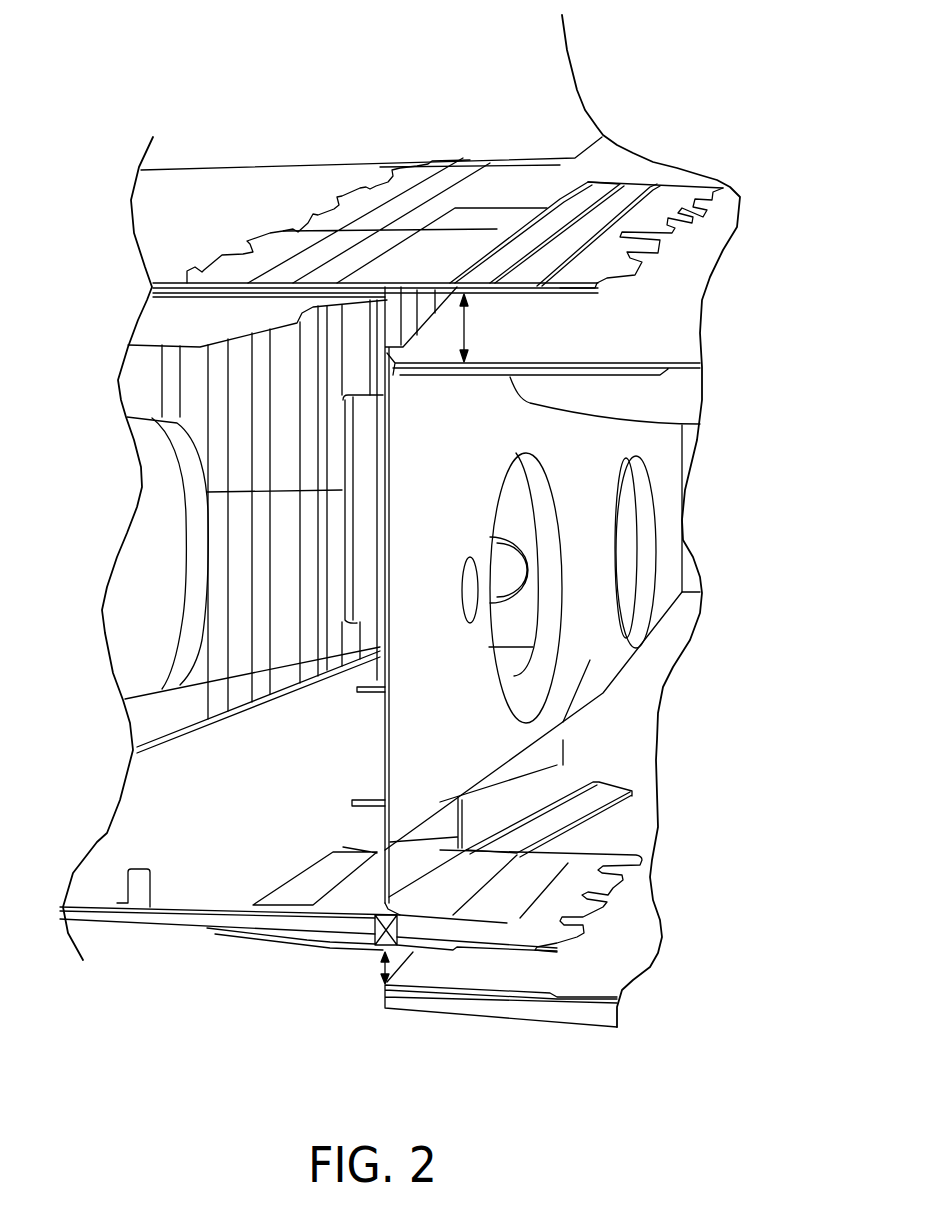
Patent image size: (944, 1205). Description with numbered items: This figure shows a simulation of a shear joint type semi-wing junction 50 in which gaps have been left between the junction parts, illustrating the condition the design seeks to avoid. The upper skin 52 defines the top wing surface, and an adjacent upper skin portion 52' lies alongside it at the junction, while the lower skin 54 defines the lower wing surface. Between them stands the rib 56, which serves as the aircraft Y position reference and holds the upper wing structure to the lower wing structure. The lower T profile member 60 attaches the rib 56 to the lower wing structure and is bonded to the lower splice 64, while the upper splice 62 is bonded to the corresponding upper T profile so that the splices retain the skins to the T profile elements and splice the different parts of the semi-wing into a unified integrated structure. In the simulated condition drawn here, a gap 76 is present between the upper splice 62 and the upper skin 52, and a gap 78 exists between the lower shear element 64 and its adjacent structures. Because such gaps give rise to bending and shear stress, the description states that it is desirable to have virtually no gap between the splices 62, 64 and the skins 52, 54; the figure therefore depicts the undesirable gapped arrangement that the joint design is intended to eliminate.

The aircraft structure assembly 50 is at (352, 72).
The upper skin 52 is at (371, 196).
The second panel 52' is at (589, 278).
The lower skin 54 is at (163, 920).
The rib 0 56 is at (450, 447).
The lower T profile member 60 is at (423, 840).
The upper splice 62 is at (489, 223).
The lower splice 64 is at (612, 874).
The gap 76 is at (470, 323).
The gap 78 is at (380, 968).